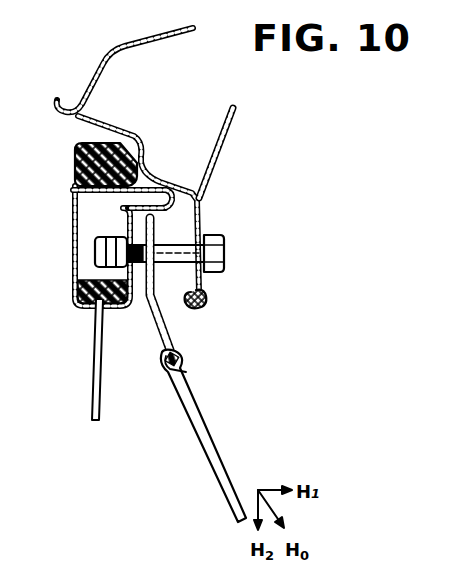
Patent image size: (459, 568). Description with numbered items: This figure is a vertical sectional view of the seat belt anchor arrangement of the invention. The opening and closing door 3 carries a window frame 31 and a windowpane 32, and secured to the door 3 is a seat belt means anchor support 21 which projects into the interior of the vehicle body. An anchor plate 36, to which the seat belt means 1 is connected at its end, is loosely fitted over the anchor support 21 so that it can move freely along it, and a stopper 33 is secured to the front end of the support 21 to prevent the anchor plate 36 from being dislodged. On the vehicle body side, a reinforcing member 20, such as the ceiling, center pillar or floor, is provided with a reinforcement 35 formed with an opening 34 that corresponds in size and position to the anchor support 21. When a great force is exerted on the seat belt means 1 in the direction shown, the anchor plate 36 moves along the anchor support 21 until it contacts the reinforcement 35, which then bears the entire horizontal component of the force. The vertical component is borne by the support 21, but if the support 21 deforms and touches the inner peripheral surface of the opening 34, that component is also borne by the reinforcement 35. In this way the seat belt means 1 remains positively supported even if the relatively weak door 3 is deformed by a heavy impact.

The seat belt means 1 is at (210, 456).
The opening and closing door 3 is at (66, 168).
The reinforcing member 20 is at (200, 133).
The seat belt means anchor support 21 is at (188, 253).
The window frame 31 is at (72, 255).
The windowpane 32 is at (90, 350).
The stopper 33 is at (222, 259).
The opening 34 is at (208, 292).
The reinforcement 35 is at (203, 213).
The anchor plate 36 is at (172, 342).